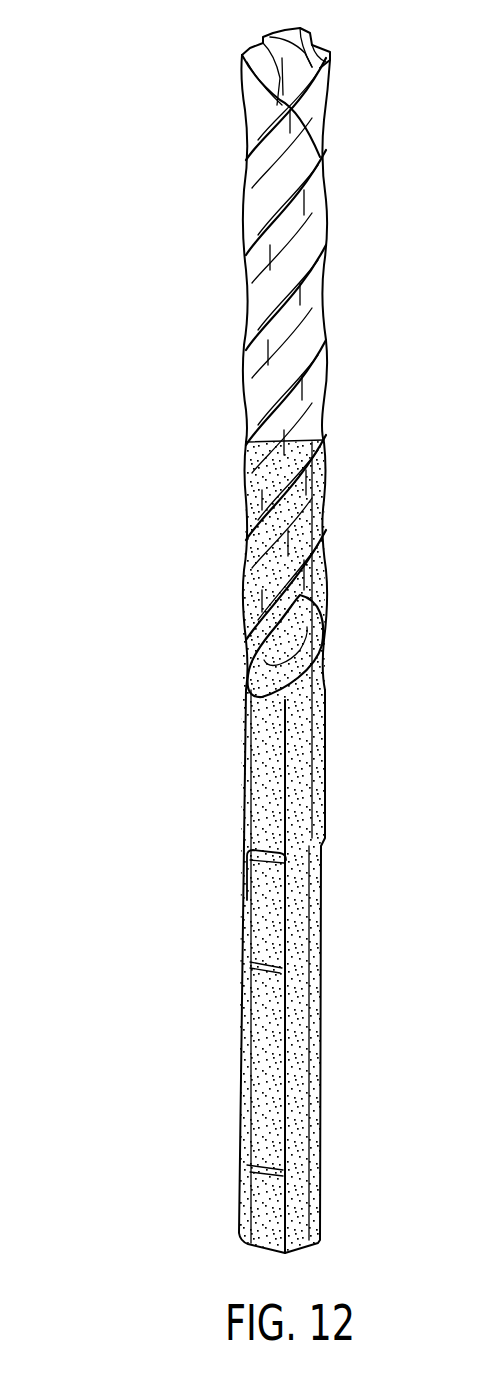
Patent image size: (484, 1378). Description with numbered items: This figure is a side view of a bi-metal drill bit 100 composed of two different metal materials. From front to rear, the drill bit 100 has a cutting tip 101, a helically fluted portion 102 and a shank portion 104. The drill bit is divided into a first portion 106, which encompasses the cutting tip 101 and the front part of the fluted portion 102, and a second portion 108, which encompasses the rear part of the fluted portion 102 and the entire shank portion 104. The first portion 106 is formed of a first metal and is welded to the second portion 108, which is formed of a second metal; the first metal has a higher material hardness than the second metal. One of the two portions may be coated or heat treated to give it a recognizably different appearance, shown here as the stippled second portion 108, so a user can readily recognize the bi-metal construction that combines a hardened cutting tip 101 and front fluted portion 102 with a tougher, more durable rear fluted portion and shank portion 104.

The drill bit 100 is at (78, 141).
The cutting tip 101 is at (325, 33).
The fluted portion 102 is at (346, 45).
The shank portion 104 is at (346, 690).
The first portion 106 is at (216, 45).
The second portion 108 is at (216, 440).